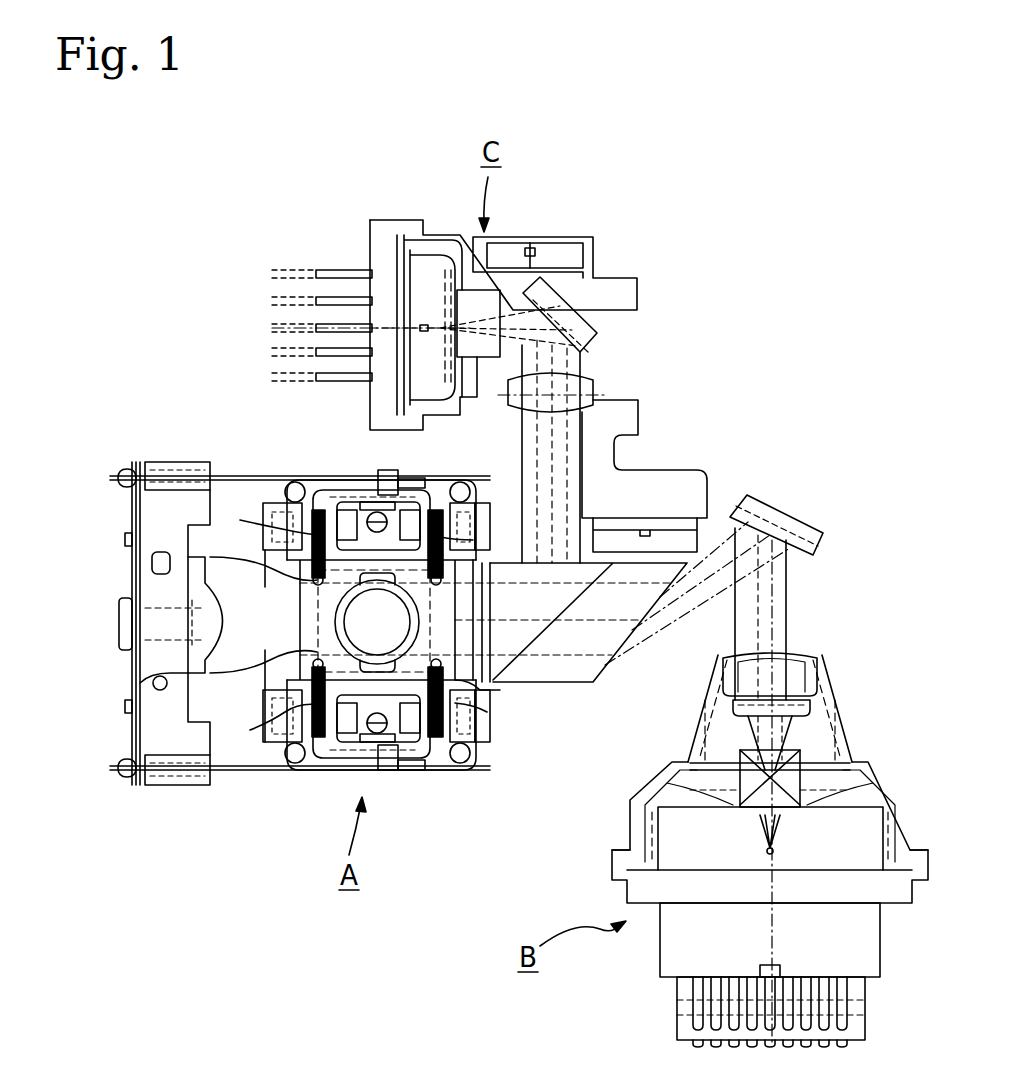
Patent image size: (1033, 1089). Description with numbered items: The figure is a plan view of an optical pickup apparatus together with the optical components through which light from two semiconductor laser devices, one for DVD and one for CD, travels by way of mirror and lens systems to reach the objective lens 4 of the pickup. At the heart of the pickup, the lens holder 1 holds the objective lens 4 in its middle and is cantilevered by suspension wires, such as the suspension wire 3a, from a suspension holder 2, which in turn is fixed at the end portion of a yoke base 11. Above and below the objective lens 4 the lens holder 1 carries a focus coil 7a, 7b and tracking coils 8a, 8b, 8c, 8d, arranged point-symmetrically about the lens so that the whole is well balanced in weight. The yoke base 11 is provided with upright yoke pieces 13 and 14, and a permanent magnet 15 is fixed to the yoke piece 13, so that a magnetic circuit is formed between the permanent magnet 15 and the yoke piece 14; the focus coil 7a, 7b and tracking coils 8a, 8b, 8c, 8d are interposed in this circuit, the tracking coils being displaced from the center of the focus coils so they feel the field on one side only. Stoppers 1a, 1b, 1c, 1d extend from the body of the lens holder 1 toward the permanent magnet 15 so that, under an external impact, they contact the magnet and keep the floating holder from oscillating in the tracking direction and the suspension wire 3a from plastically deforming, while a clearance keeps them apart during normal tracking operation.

The lens holder 1 is at (320, 607).
The stopper 1a is at (318, 537).
The stopper 1b is at (455, 585).
The stopper 1c is at (300, 688).
The stopper 1d is at (470, 699).
The suspension holder 2 is at (150, 586).
The suspension wire 3a is at (235, 477).
The objective lens 4 is at (410, 623).
The focus coil 7a is at (440, 500).
The focus coil 7b is at (430, 753).
The tracking coil 8a is at (240, 520).
The tracking coil 8b is at (473, 540).
The tracking coil 8c is at (250, 730).
The tracking coil 8d is at (487, 712).
The yoke base 11 is at (152, 683).
The yoke piece 13 is at (275, 503).
The yoke piece 14 is at (345, 525).
The permanent magnet 15 is at (300, 480).